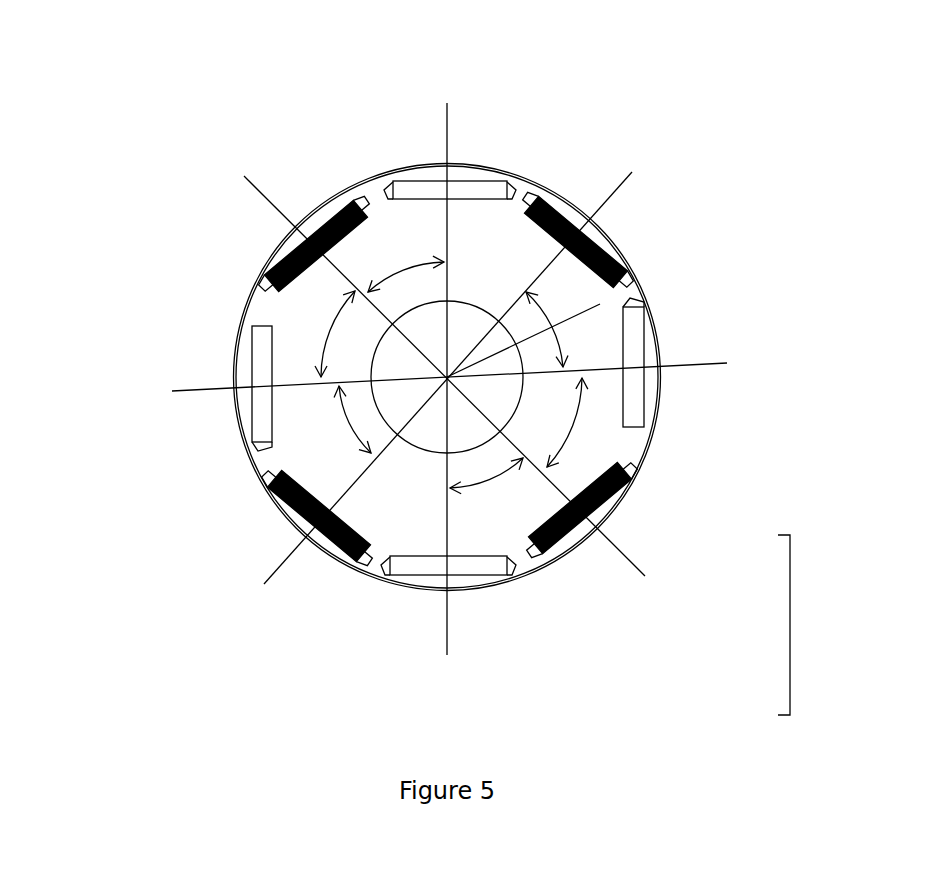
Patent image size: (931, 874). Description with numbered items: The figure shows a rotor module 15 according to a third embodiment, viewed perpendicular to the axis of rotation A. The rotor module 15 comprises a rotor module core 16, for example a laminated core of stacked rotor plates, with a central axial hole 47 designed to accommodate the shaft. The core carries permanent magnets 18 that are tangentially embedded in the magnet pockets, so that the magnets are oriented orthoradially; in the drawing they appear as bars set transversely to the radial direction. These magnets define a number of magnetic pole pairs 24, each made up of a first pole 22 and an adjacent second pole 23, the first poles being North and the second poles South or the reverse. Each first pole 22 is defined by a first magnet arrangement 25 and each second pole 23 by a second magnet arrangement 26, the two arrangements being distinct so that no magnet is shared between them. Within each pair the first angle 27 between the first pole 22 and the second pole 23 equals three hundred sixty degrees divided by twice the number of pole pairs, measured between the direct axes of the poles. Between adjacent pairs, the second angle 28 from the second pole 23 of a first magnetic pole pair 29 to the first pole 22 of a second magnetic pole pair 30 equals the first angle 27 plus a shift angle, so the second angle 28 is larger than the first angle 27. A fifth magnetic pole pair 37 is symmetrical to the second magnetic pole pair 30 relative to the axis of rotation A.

The rotor module 15 is at (213, 108).
The rotor module core 16 is at (600, 404).
The permanent magnet 18 is at (493, 192).
The first pole 22 is at (462, 160).
The second pole 23 is at (277, 228).
The magnetic pole pair 24 is at (790, 626).
The first magnet arrangement 25 is at (403, 586).
The second magnet arrangement 26 is at (632, 488).
The first angle 27 is at (410, 318).
The second angle 28 is at (325, 344).
The first magnetic pole pair 29 is at (362, 158).
The second magnetic pole pair 30 is at (222, 478).
The fifth magnetic pole pair 37 is at (657, 277).
The axial hole 47 is at (337, 198).
The axis of rotation A is at (600, 305).